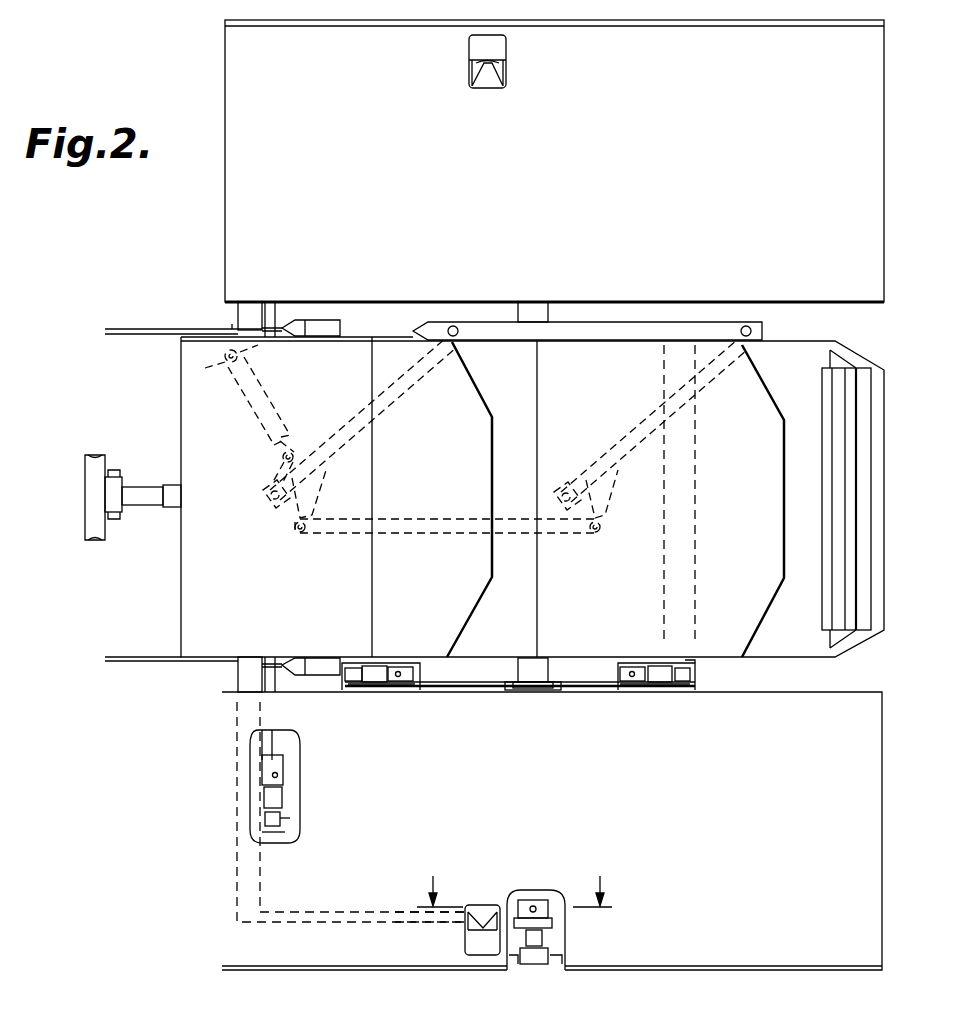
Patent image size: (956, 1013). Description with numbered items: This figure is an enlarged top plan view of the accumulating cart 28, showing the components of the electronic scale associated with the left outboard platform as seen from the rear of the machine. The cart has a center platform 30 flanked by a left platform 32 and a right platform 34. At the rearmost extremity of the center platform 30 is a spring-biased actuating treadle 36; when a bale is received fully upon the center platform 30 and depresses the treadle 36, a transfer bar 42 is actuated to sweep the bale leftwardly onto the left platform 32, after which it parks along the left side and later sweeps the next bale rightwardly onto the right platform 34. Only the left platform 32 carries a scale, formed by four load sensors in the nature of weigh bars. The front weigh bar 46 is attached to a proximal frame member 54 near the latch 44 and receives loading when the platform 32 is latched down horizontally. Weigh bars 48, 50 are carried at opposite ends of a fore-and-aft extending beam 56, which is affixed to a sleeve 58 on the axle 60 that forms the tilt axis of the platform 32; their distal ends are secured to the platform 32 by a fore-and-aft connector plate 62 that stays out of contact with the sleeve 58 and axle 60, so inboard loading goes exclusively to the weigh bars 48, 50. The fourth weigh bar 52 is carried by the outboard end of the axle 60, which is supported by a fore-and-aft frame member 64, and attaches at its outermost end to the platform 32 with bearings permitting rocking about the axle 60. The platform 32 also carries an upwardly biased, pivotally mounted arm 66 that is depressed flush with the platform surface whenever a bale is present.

The accumulating cart 28 is at (150, 255).
The center platform 30 is at (168, 592).
The left platform 32 is at (210, 871).
The right platform 34 is at (213, 68).
The actuating treadle 36 is at (850, 425).
The transfer bar 42 is at (598, 336).
The latch 44 is at (303, 814).
The front weigh bar 46 is at (296, 778).
The weigh bar 48 is at (372, 694).
The weigh bar 50 is at (660, 694).
The fourth weigh bar 52 is at (580, 932).
The proximal frame member 54 is at (250, 762).
The fore-and-aft extending beam 56 is at (445, 683).
The sleeve 58 is at (548, 682).
The axle 60 is at (520, 660).
The connector plate 62 is at (578, 690).
The fore-and-aft frame member 64 is at (398, 930).
The arm 66 is at (483, 905).